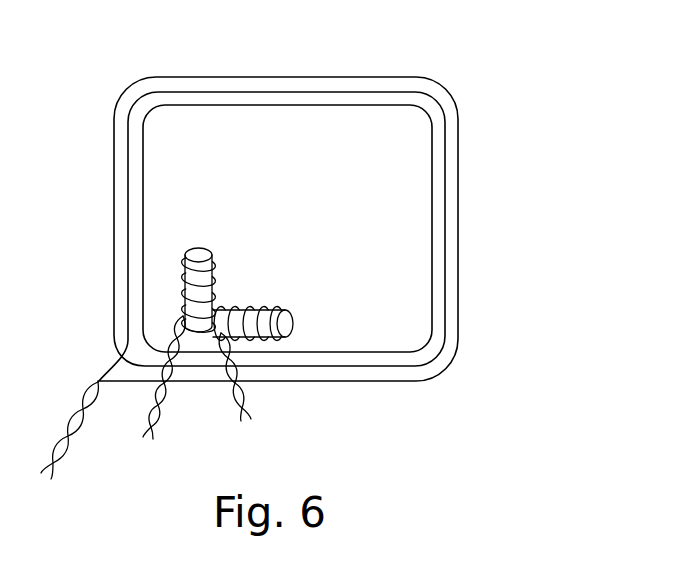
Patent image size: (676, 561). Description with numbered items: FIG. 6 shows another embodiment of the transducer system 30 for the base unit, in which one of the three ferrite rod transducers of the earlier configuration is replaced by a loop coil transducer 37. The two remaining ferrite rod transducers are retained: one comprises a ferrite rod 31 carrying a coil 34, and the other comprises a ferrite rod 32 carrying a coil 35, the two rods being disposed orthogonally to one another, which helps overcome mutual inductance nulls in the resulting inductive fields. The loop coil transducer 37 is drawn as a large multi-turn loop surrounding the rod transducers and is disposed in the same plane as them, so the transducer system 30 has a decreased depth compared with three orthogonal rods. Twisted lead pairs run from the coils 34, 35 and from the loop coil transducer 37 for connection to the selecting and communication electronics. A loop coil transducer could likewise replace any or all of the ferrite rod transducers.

The transducer system 30 is at (424, 62).
The ferrite rod 31 is at (291, 323).
The ferrite rod 32 is at (199, 247).
The coil 34 is at (272, 310).
The coil 35 is at (220, 273).
The loop coil transducer 37 is at (345, 383).